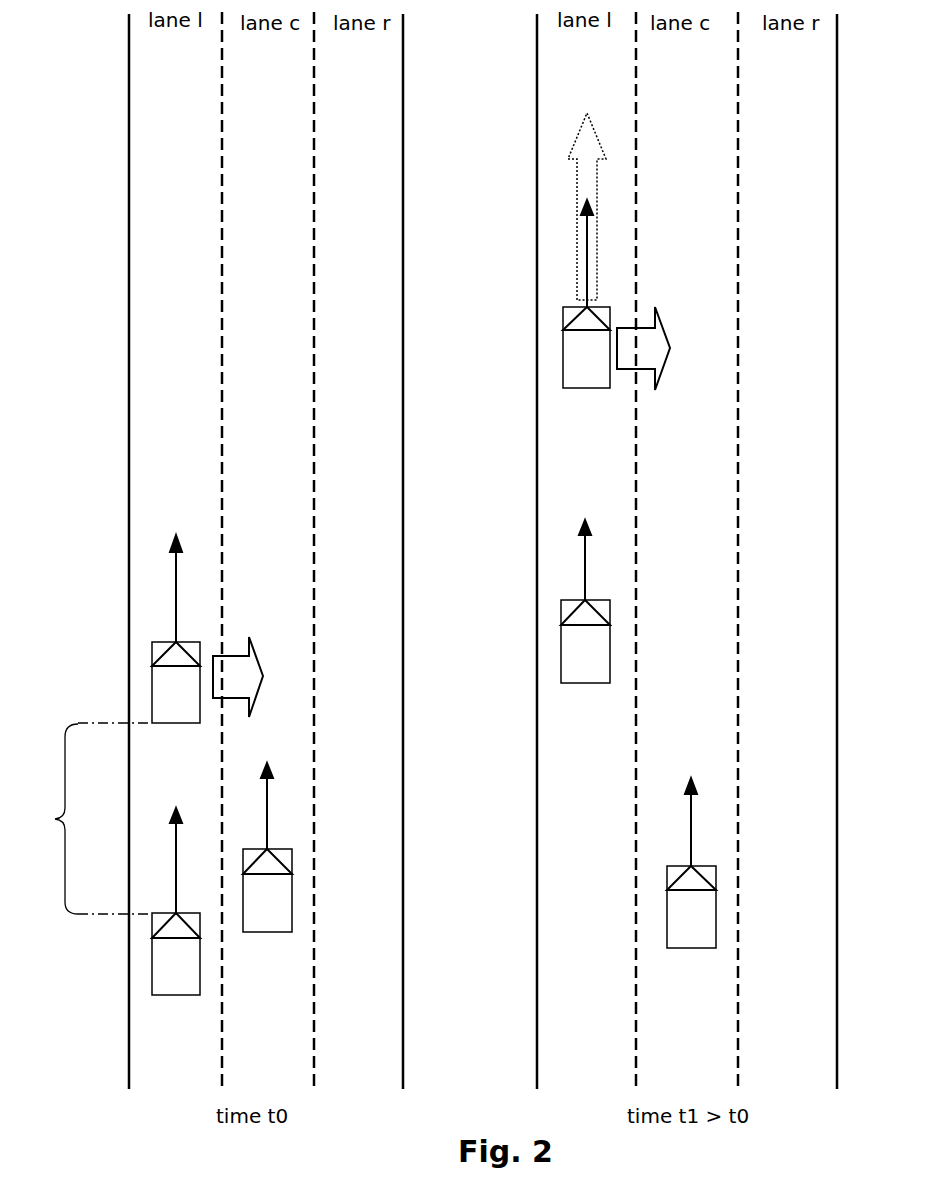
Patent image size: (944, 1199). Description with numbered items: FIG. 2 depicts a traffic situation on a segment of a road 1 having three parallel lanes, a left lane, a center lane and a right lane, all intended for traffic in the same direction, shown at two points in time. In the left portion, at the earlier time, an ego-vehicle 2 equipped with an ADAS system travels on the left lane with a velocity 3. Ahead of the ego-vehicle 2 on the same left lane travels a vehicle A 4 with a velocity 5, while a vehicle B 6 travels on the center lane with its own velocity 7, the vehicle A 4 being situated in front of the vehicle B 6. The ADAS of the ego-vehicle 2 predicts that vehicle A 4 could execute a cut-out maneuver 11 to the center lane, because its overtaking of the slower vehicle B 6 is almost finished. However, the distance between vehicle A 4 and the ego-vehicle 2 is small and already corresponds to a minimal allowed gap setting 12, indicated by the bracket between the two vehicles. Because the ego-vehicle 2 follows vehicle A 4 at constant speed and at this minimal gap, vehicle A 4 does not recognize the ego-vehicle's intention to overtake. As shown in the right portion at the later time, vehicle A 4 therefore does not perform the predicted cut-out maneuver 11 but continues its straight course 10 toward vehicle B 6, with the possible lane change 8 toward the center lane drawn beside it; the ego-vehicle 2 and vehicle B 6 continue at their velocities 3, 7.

The road 1 is at (390, 835).
The ego-vehicle 2 is at (152, 960).
The velocity v_E1 3 is at (175, 872).
The vehicle A 4 is at (195, 722).
The velocity v_A 5 is at (176, 596).
The vehicle B 6 is at (292, 891).
The velocity v_B 7 is at (267, 808).
The lane change of vehicle A 8 is at (657, 335).
The straight course 10 is at (572, 158).
The cut-out maneuver 11 is at (252, 667).
The minimal allowed gap setting 12 is at (91, 818).